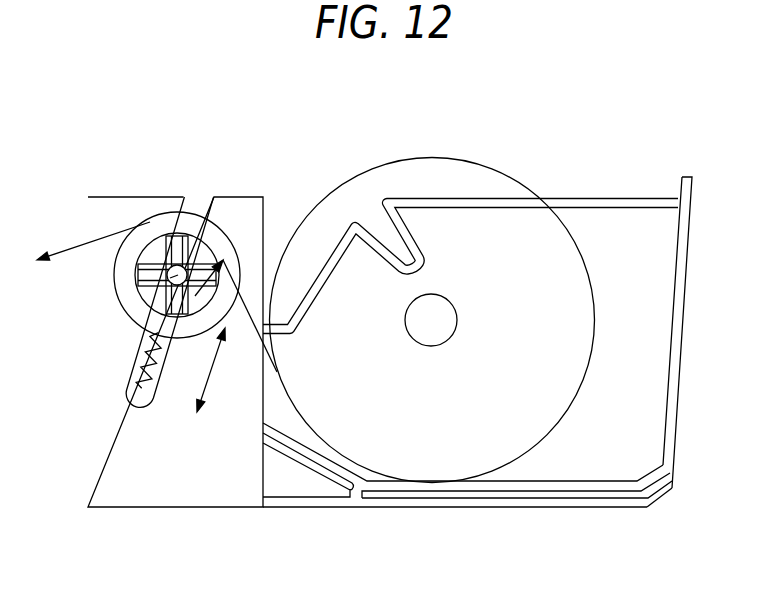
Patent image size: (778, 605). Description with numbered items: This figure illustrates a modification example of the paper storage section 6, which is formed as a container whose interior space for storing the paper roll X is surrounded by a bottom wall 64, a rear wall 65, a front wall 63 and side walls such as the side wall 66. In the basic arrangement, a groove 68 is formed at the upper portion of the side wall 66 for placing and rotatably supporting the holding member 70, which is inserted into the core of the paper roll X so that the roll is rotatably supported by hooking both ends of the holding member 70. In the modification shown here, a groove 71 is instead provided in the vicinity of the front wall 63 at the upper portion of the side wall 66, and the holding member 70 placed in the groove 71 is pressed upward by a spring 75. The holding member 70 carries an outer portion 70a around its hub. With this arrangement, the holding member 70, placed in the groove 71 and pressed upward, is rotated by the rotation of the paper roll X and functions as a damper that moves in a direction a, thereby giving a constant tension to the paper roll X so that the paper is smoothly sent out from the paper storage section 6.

The paper storage section 6 is at (635, 100).
The front wall 63 is at (296, 428).
The bottom wall 64 is at (542, 484).
The rear wall 65 is at (672, 240).
The side wall 66 is at (658, 218).
The groove 68 is at (383, 200).
The holding member 70 is at (118, 298).
The roller outer ring 70a is at (128, 317).
The groove 71 is at (197, 207).
The spring 75 is at (127, 392).
The paper roll X is at (480, 160).
The direction a is at (214, 370).